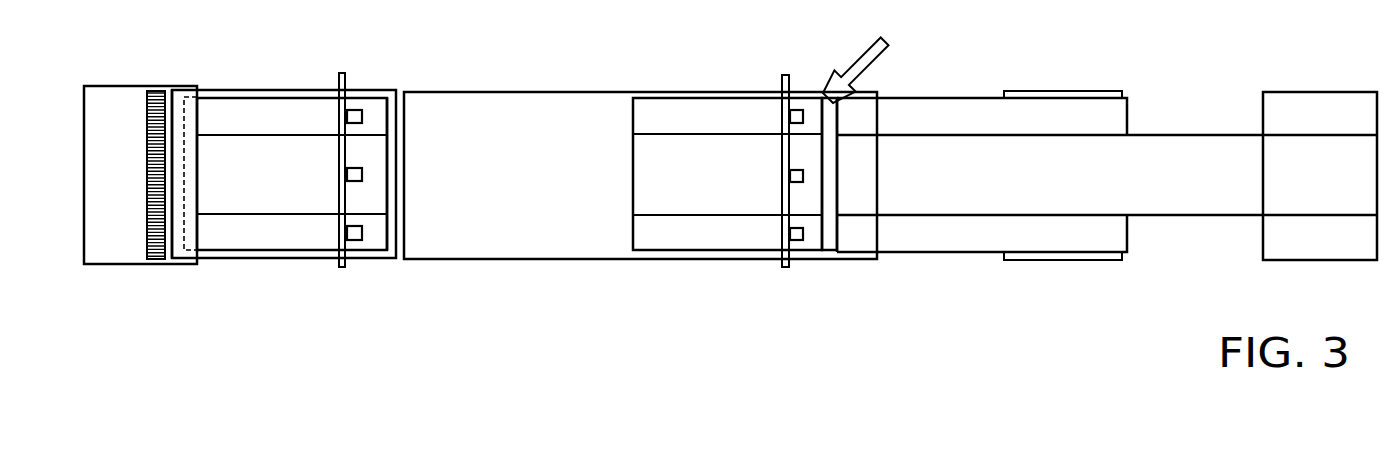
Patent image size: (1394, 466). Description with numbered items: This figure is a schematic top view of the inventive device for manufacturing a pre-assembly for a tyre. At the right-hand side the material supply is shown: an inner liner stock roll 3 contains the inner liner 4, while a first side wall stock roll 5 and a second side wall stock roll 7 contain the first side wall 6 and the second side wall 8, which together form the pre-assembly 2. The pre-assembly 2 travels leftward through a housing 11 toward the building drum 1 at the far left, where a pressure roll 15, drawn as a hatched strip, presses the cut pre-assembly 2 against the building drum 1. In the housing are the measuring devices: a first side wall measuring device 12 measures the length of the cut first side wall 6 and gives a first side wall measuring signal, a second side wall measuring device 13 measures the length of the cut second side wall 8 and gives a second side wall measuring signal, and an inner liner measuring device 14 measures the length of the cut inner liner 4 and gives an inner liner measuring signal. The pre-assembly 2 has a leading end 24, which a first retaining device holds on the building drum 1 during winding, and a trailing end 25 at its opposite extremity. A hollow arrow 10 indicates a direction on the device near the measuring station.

The building drum 1 is at (132, 265).
The pressure roll 15 is at (157, 258).
The leading end 24 is at (210, 170).
The pre-assembly 2 is at (242, 154).
The trailing end 25 is at (388, 118).
The housing 11 is at (393, 90).
The first side wall measuring device 12 is at (358, 238).
The second side wall measuring device 13 is at (355, 117).
The inner liner measuring device 14 is at (357, 167).
The direction of force 10 is at (848, 72).
The second side wall 8 is at (922, 108).
The first side wall 6 is at (935, 230).
The second side wall stock roll 7 is at (1067, 93).
The first side wall stock roll 5 is at (1062, 260).
The inner liner 4 is at (1205, 160).
The inner liner stock roll 3 is at (1322, 260).